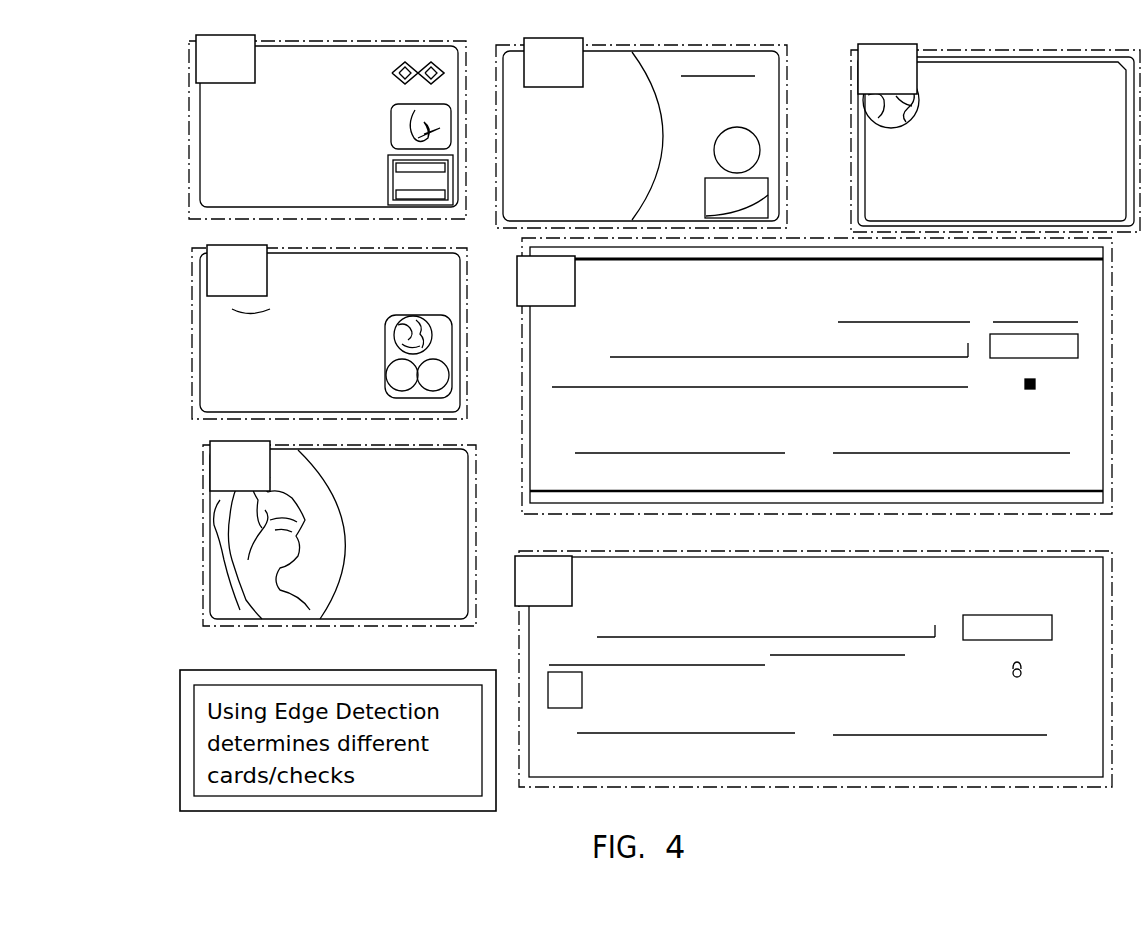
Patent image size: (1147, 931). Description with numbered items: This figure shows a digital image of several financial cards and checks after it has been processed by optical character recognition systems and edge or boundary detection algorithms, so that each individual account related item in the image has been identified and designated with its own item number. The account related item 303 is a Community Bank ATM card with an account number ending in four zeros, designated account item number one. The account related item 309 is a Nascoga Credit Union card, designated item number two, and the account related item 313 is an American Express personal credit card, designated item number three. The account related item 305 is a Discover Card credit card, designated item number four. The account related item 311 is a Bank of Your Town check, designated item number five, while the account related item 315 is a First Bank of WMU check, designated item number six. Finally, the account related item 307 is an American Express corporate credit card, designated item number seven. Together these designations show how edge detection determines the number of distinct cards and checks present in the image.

The account related item 303 is at (327, 119).
The account related item 305 is at (641, 125).
The account related item 307 is at (995, 131).
The account related item 309 is at (329, 323).
The account related item 311 is at (830, 376).
The account related item 313 is at (339, 527).
The account related item 315 is at (830, 669).